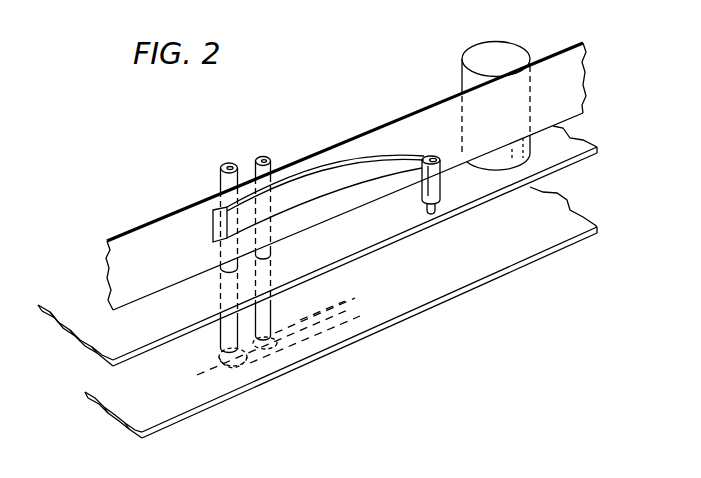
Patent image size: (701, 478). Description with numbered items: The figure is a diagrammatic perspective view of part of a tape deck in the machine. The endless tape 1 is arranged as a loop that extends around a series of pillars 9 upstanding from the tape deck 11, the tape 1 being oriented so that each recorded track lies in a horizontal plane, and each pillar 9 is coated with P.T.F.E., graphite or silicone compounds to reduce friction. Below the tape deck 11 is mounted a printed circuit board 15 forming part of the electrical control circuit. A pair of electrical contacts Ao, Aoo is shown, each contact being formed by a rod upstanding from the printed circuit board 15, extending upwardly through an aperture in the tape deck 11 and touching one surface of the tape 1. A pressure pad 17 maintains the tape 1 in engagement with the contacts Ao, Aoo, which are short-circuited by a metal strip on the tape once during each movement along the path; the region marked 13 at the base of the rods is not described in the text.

The endless tape 1 is at (560, 88).
The pillar 9 is at (472, 54).
The pressure pad 17 is at (357, 172).
The tape deck 11 is at (83, 327).
The solder joint at pin base 13 is at (230, 333).
The printed circuit board 15 is at (454, 292).
The electrical contact Ao is at (216, 241).
The electrical contact Aoo is at (262, 239).